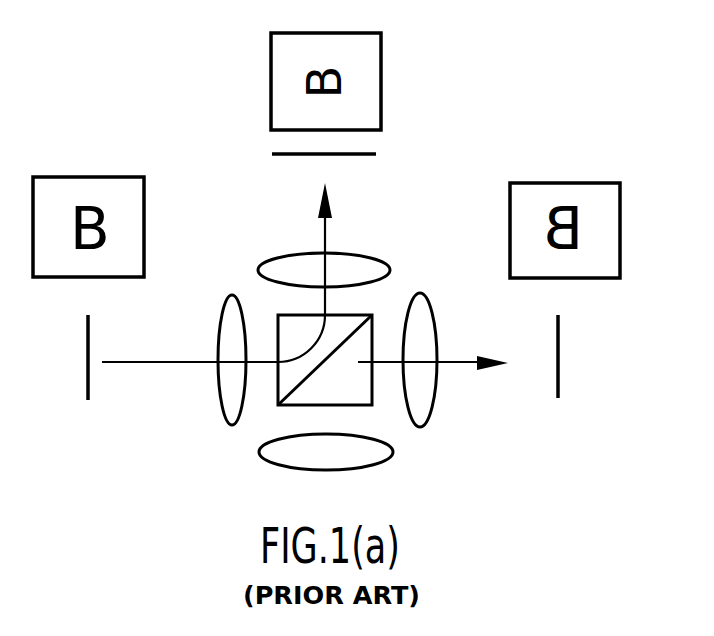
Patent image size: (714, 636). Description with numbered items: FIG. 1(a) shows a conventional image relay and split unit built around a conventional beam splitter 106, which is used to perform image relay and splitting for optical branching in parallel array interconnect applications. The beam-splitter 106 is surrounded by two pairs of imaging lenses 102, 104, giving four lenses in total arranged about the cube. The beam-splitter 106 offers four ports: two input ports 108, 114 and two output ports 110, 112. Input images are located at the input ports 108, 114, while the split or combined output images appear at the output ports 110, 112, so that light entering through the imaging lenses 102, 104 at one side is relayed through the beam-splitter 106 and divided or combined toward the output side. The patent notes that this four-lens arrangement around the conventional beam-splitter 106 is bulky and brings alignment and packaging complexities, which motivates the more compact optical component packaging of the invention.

The imaging lenses 102 is at (244, 281).
The imaging lenses 104 is at (402, 437).
The beam splitter 106 is at (372, 315).
The input port 108 is at (225, 420).
The output port 110 is at (352, 255).
The output port 112 is at (436, 316).
The input port 114 is at (293, 467).